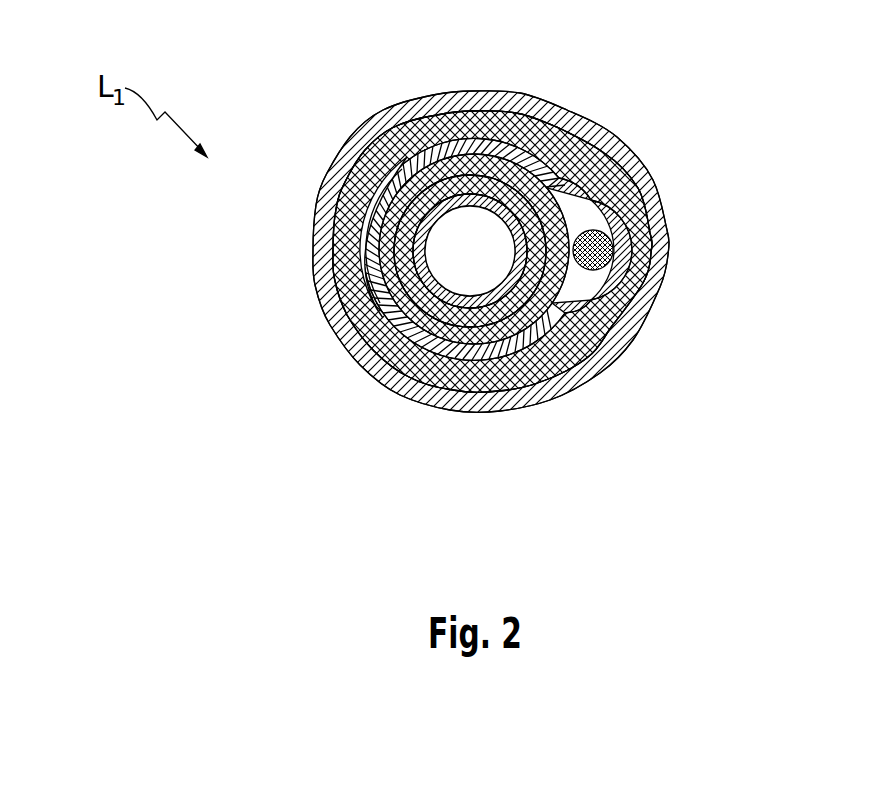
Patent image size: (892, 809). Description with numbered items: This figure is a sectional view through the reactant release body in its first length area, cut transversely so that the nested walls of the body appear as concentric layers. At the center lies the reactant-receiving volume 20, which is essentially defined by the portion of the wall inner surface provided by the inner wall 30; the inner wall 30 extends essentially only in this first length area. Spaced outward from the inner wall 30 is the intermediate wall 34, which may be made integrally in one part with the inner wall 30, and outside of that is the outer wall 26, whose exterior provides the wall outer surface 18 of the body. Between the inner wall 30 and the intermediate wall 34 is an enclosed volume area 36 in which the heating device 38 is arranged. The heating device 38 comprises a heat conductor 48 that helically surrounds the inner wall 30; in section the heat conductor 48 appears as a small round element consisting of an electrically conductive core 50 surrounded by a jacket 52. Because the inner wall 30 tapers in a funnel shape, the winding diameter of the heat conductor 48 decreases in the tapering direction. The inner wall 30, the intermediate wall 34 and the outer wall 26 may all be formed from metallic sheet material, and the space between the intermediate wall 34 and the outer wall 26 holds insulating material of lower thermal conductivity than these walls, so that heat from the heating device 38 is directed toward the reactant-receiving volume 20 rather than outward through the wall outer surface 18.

The wall outer surface 18 is at (317, 300).
The reactant-receiving volume 20 is at (448, 255).
The outer wall 26 is at (408, 397).
The inner wall 30 is at (493, 200).
The intermediate wall 34 is at (400, 172).
The volume area 36 is at (583, 197).
The heating device 38 is at (572, 302).
The heat conductor 48 is at (603, 225).
The electrically conductive core 50 is at (512, 350).
The jacket 52 is at (487, 345).